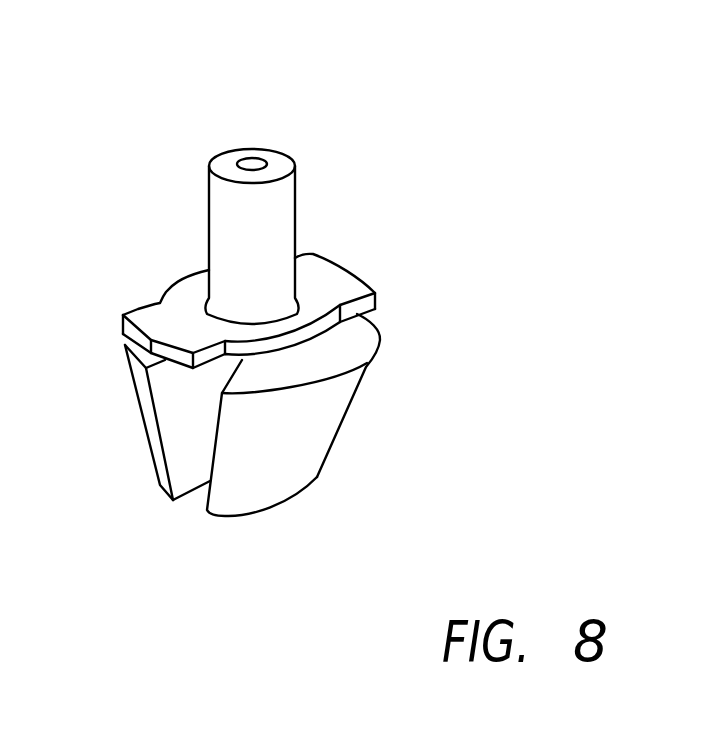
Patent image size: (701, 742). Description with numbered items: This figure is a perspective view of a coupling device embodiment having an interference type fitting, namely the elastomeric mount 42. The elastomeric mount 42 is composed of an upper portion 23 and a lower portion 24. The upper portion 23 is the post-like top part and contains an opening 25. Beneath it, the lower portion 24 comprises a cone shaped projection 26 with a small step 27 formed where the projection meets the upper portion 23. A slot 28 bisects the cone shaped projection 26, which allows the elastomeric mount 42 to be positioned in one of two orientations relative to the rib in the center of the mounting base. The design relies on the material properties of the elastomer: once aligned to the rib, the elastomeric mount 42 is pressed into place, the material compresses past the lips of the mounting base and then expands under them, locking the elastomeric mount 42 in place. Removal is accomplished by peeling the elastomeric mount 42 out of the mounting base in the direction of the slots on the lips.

The upper portion 23 is at (302, 176).
The lower portion 24 is at (333, 408).
The opening 25 is at (252, 166).
The cone shaped projection 26 is at (270, 480).
The small step 27 is at (357, 343).
The slot 28 is at (186, 467).
The elastomeric mount 42 is at (296, 277).